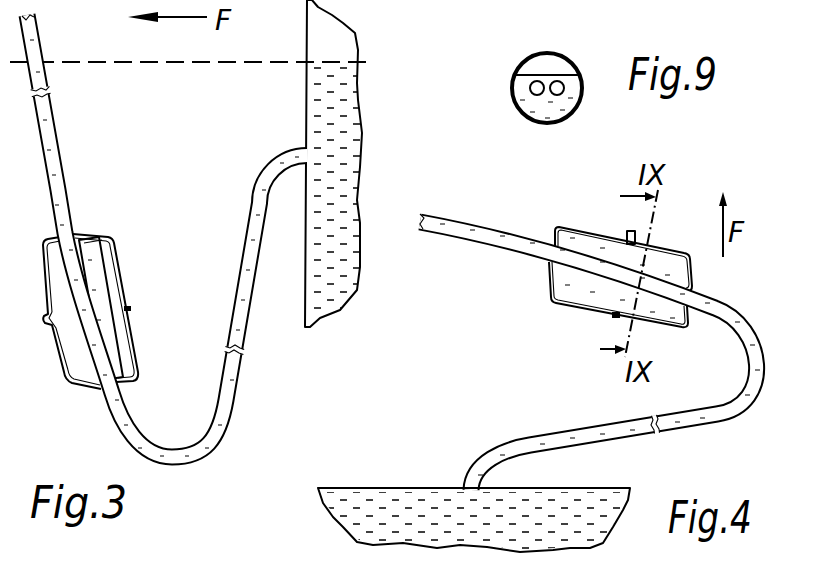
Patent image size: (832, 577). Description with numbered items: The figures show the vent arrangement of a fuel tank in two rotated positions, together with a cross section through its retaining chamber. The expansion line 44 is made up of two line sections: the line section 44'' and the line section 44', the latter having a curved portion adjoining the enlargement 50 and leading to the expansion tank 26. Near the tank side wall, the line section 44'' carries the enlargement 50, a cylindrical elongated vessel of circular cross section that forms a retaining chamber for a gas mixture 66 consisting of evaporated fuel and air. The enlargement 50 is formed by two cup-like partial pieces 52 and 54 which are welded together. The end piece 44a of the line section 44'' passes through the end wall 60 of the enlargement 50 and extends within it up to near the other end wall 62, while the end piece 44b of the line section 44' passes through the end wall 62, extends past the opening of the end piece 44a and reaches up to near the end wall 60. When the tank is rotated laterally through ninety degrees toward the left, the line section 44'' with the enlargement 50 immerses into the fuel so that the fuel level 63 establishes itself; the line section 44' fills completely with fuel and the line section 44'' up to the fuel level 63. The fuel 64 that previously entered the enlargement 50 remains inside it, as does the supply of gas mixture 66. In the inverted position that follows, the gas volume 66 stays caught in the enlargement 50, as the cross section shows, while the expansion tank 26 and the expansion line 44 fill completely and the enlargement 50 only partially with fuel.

In FIG. 3, the expansion tank 26 is at (370, 105).
In FIG. 4, the expansion tank 26 is at (416, 465).
In FIG. 3, the expansion line 44 is at (167, 236).
In FIG. 4, the expansion line 44 is at (590, 356).
In FIG. 3, the line section 44' is at (253, 268).
In FIG. 9, the line section 44' is at (591, 104).
In FIG. 4, the line section 44' is at (589, 428).
In FIG. 3, the line section 44'' is at (84, 120).
In FIG. 9, the line section 44'' is at (508, 113).
In FIG. 4, the line section 44'' is at (565, 258).
In FIG. 3, the end piece 44a is at (90, 392).
In FIG. 3, the end piece 44b is at (90, 268).
In FIG. 3, the enlargement 50 is at (119, 226).
In FIG. 9, the enlargement 50 is at (582, 55).
In FIG. 4, the enlargement 50 is at (558, 315).
In FIG. 3, the cup-like partial piece 52 is at (57, 362).
In FIG. 3, the cup-like partial piece 54 is at (46, 268).
In FIG. 3, the end wall 60 is at (88, 235).
In FIG. 3, the end wall 62 is at (132, 382).
In FIG. 3, the fuel level 63 is at (74, 58).
In FIG. 3, the fuel 64 is at (72, 390).
In FIG. 3, the gas mixture 66 is at (108, 282).
In FIG. 9, the gas mixture 66 is at (535, 63).